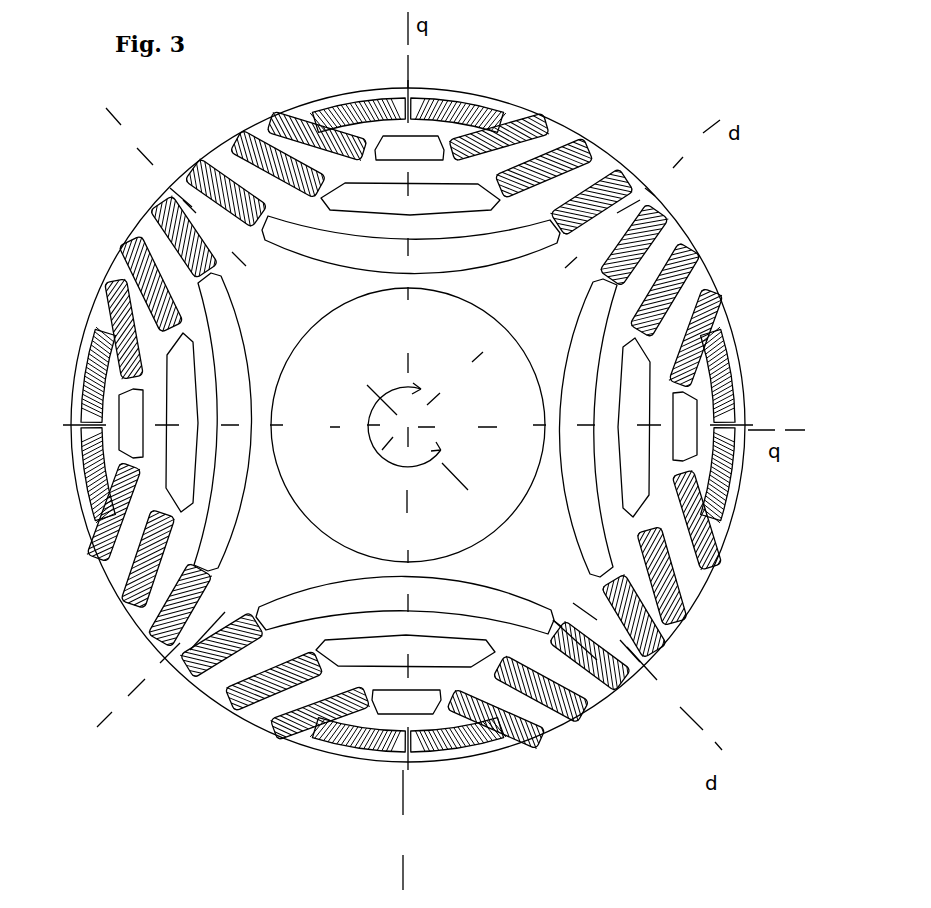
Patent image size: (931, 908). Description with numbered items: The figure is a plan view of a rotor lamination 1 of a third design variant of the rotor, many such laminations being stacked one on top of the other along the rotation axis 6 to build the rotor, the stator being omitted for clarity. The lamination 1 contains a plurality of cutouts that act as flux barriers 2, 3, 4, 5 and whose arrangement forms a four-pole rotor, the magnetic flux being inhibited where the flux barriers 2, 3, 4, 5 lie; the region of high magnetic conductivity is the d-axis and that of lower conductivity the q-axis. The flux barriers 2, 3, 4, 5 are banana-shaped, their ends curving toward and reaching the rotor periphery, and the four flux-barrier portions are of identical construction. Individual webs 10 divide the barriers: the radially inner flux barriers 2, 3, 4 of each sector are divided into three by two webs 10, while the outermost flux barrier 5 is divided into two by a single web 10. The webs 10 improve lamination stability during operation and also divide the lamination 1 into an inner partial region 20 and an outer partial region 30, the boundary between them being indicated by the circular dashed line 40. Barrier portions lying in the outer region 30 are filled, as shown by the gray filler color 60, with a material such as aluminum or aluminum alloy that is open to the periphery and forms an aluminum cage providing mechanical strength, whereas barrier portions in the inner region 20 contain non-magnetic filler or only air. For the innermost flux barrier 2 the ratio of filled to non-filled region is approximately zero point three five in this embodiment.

The rotor lamination 1 is at (617, 103).
The flux barrier 2 is at (408, 424).
The flux barrier 3 is at (410, 426).
The flux barrier 4 is at (405, 430).
The flux barrier 5 is at (366, 96).
The rotation axis 6 is at (384, 378).
The web 10 is at (421, 93).
The inner partial region 20 is at (537, 540).
The outer partial region 30 is at (557, 722).
The circular dashed line 40 is at (255, 610).
The gray filler color 60 is at (633, 222).